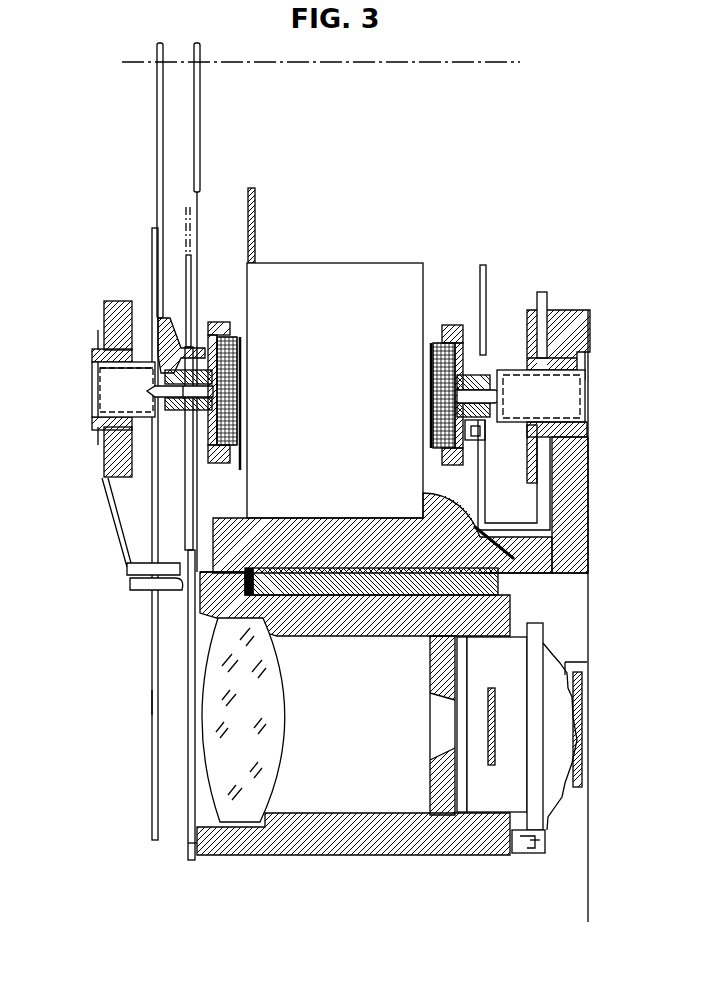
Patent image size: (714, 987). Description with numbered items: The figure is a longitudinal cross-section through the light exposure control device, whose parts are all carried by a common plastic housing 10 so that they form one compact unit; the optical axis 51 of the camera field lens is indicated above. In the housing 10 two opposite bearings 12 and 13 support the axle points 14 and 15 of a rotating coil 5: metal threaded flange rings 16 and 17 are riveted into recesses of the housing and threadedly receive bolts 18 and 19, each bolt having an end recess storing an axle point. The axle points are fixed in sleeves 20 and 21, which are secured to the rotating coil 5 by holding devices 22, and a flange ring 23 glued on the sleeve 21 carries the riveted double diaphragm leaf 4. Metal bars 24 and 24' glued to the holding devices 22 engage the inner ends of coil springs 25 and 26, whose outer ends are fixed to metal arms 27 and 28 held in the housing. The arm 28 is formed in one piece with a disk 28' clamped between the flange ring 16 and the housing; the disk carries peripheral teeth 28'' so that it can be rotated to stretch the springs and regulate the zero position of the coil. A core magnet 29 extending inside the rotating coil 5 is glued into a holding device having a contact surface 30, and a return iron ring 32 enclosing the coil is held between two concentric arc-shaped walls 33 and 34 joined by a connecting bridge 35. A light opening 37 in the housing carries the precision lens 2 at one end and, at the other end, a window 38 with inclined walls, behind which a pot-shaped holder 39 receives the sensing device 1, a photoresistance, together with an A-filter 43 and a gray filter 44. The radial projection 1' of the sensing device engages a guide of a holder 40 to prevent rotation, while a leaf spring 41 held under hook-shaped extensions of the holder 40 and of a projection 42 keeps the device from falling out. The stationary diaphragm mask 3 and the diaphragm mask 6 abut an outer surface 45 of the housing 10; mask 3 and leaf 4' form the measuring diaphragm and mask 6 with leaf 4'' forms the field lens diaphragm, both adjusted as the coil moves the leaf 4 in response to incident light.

The light sensitive electrical sensing device 1 is at (561, 724).
The radial projection 1' is at (595, 850).
The precision lens 2 is at (248, 808).
The stationary diaphragm mask 3 is at (190, 750).
The double diaphragm leaf 4 is at (109, 534).
The leaf of the double diaphragm leaf 4' is at (124, 707).
The other leaf of the double diaphragm leaf 4'' is at (123, 180).
The rotating coil 5 is at (443, 347).
The diaphragm mask 6 is at (200, 97).
The housing 10 is at (108, 300).
The bearing 12 is at (600, 375).
The bearing 13 is at (88, 372).
The axle point 14 is at (597, 333).
The axle point 15 is at (147, 389).
The threaded flange ring 16 is at (567, 432).
The threaded flange ring 17 is at (92, 350).
The bolt 18 is at (535, 405).
The bolt 19 is at (112, 407).
The sleeve 20 is at (489, 378).
The sleeve 21 is at (103, 452).
The holding device 22 is at (218, 320).
The flange ring 23 is at (160, 318).
The metal bar 24 is at (113, 377).
The metal bar 24' is at (579, 463).
The coil spring 25 is at (187, 495).
The coil spring 26 is at (483, 483).
The metal arm 27 is at (128, 587).
The metal arm 28 is at (569, 569).
The disk 28' is at (572, 315).
The teeth 28'' is at (528, 283).
The core magnet 29 is at (360, 300).
The contact surface 30 is at (507, 575).
The return iron ring 32 is at (295, 580).
The wall 33 is at (353, 535).
The wall 34 is at (353, 613).
The connecting bridge 35 is at (212, 597).
The light opening 37 is at (297, 793).
The window 38 is at (433, 735).
The pot-shaped holder 39 is at (488, 810).
The holder 40 is at (518, 853).
The leaf spring 41 is at (578, 775).
The projection 42 is at (580, 667).
The A-filter 43 is at (458, 812).
The gray filter 44 is at (466, 810).
The outer surface 45 is at (192, 843).
The optical axis 51 is at (355, 64).